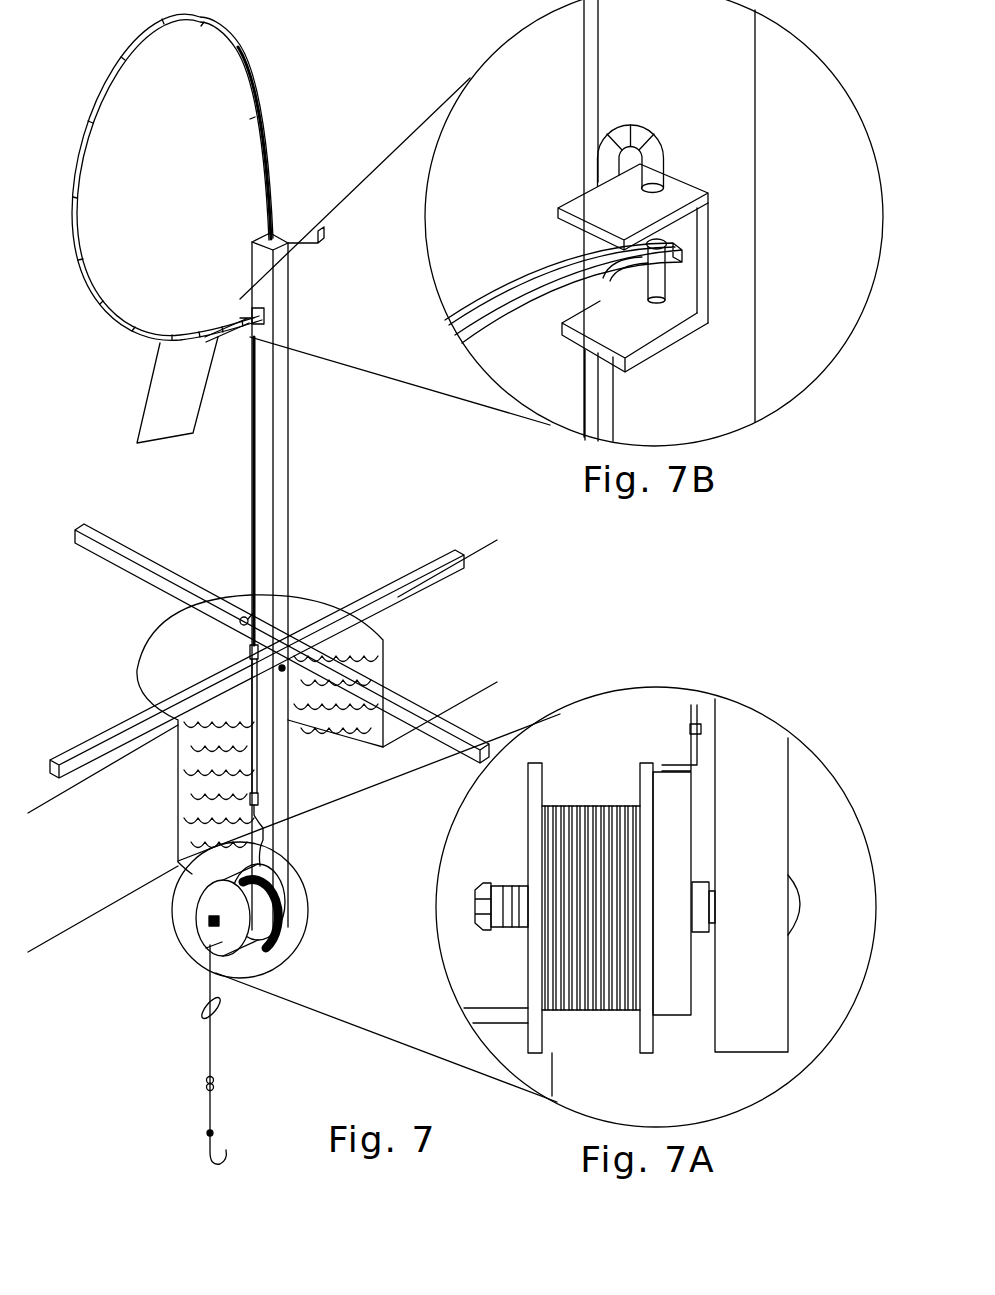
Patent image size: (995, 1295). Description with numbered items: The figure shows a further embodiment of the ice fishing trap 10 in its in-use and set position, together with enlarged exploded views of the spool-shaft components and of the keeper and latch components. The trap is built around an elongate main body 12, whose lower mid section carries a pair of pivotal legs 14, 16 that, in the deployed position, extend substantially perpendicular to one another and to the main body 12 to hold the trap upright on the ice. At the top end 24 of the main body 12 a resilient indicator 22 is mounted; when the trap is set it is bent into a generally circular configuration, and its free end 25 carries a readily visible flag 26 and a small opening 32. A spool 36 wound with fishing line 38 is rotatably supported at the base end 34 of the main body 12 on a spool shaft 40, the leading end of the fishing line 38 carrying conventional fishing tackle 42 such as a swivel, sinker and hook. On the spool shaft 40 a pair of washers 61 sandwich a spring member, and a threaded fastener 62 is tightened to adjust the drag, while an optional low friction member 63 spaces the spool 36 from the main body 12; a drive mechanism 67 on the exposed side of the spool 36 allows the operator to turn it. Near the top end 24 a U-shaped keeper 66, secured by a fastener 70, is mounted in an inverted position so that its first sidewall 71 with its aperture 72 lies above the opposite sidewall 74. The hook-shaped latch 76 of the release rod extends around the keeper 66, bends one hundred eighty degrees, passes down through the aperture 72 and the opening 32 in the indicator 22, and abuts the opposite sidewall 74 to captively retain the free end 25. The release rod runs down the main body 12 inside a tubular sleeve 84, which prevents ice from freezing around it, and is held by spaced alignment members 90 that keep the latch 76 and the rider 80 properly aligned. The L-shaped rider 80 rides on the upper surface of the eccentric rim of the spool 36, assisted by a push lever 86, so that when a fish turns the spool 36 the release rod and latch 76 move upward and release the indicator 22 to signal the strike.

In FIG. 7, the ice fishing trap 10 is at (172, 495).
In FIG. 7, the main body 12 is at (288, 524).
In FIG. 7, the first leg 14 is at (115, 725).
In FIG. 7, the second leg 16 is at (128, 568).
In FIG. 7, the resilient indicator 22 is at (84, 208).
In FIG. 7, the top end 24 is at (323, 232).
In FIG. 7B, the free end 25 is at (555, 262).
In FIG. 7, the flag 26 is at (178, 403).
In FIG. 7B, the opening 32 is at (650, 300).
In FIG. 7A, the base end 34 is at (752, 992).
In FIG. 7, the spool 36 is at (205, 917).
In FIG. 7A, the spool 36 is at (527, 990).
In FIG. 7, the fishing line 38 is at (200, 1012).
In FIG. 7A, the fishing line 38 is at (562, 1070).
In FIG. 7A, the spool shaft 40 is at (797, 904).
In FIG. 7, the fishing tackle 42 is at (206, 1085).
In FIG. 7A, the washers 61 is at (521, 880).
In FIG. 7A, the threaded fastener 62 is at (479, 886).
In FIG. 7A, the low friction member 63 is at (706, 892).
In FIG. 7B, the keeper 66 is at (588, 250).
In FIG. 7, the drive mechanism 67 is at (210, 957).
In FIG. 7A, the drive mechanism 67 is at (478, 1015).
In FIG. 7B, the fastener 70 is at (691, 255).
In FIG. 7B, the first sidewall 71 is at (611, 194).
In FIG. 7B, the aperture 72 is at (666, 186).
In FIG. 7B, the opposite sidewall 74 is at (559, 336).
In FIG. 7B, the latch 76 is at (548, 284).
In FIG. 7A, the rider 80 is at (677, 762).
In FIG. 7, the tubular sleeve 84 is at (250, 774).
In FIG. 7, the push lever 86 is at (236, 622).
In FIG. 7, the alignment members 90 is at (263, 347).
In FIG. 7A, the alignment members 90 is at (700, 722).